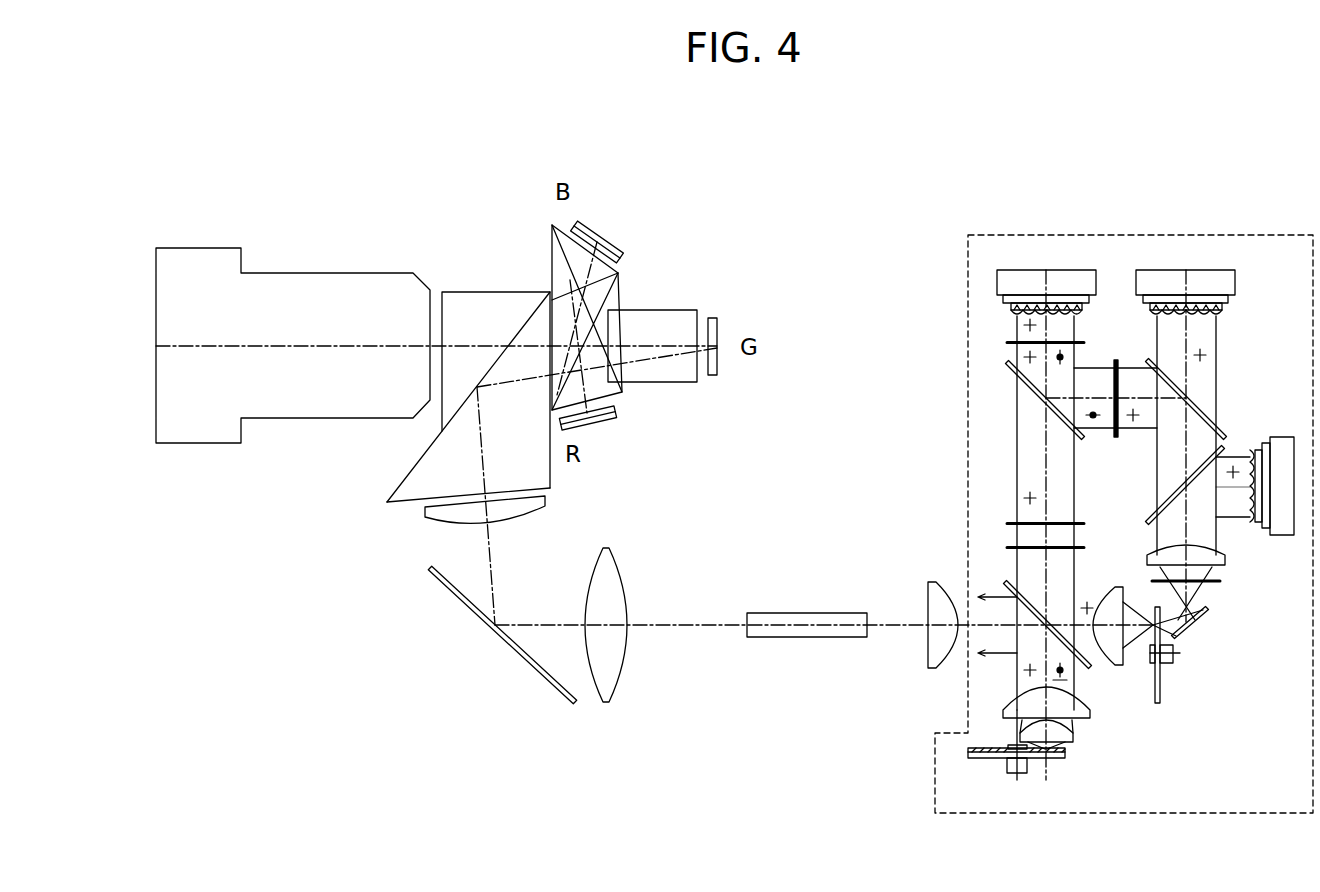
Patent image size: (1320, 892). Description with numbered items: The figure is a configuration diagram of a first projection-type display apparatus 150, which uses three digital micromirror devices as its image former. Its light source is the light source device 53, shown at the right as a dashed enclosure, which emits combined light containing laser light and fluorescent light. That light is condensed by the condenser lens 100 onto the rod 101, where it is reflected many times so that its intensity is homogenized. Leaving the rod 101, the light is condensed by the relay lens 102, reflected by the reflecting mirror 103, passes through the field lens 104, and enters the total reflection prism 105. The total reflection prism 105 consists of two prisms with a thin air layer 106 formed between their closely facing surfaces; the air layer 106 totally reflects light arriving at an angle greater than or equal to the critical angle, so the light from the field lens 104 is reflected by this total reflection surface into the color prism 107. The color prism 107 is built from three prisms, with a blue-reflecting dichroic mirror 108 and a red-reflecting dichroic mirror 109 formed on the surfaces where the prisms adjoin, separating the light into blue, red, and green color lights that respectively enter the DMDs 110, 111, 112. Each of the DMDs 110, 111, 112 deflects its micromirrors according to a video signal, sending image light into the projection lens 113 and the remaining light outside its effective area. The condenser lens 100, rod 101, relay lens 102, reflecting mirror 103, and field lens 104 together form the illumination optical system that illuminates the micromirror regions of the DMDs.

The light source device 53 is at (968, 470).
The condenser lens 100 is at (932, 670).
The rod 101 is at (828, 638).
The relay lens 102 is at (623, 662).
The reflecting mirror 103 is at (518, 653).
The field lens 104 is at (545, 500).
The total reflection prism 105 is at (403, 477).
The air layer 106 is at (523, 327).
The color prism 107 is at (673, 381).
The blue-reflecting dichroic mirror 108 is at (602, 312).
The red-reflecting dichroic mirror 109 is at (612, 328).
The DMD 110 is at (585, 227).
The DMD 111 is at (607, 417).
The DMD 112 is at (717, 324).
The projection lens 113 is at (318, 272).
The first projection-type display apparatus 150 is at (878, 158).